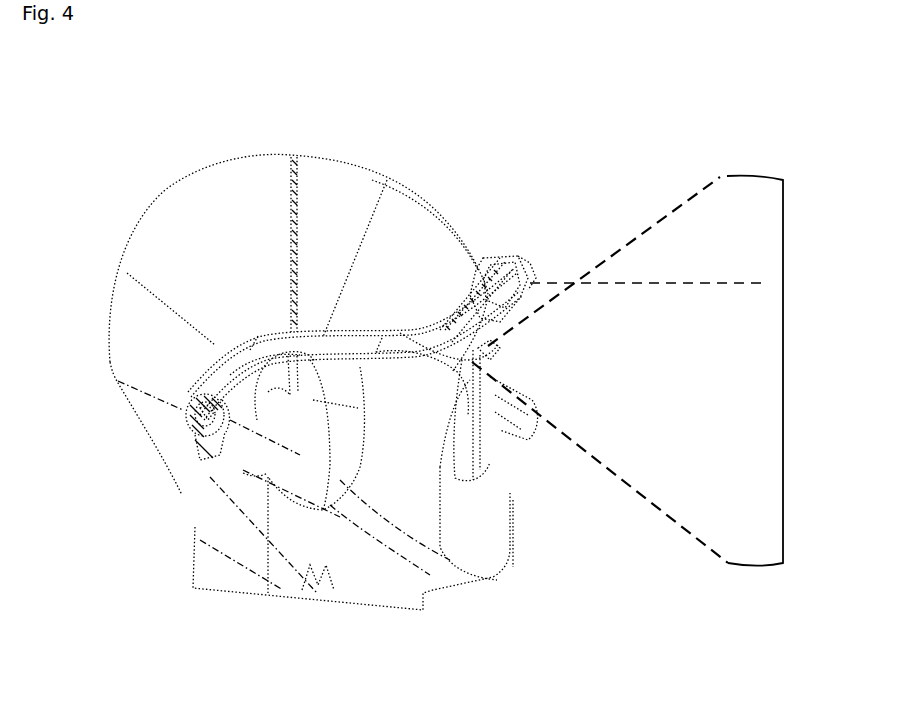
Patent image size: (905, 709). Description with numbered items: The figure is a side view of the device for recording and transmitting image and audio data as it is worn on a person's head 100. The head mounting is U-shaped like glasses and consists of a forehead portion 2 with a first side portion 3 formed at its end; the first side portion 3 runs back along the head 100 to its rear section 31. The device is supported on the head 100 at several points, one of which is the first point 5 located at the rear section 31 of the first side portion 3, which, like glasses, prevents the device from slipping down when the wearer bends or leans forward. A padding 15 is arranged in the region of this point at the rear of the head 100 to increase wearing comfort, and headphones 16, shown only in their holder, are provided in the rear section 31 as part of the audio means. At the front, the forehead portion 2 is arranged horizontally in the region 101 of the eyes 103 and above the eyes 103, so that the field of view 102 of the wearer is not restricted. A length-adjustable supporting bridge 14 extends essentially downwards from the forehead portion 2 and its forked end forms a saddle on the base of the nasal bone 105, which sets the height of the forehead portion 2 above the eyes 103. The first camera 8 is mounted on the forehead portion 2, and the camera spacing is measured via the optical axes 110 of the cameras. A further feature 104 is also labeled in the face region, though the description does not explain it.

The human head 100 is at (200, 200).
The first side portion 3 is at (323, 343).
The rear section of the first side portion 31 is at (237, 358).
The region of the eyes 101 is at (465, 342).
The supporting bridge 14 is at (502, 323).
The forehead portion 2 is at (500, 272).
The first camera 8 is at (535, 272).
The base of the nasal bone 105 is at (495, 359).
The eyes 103 is at (467, 357).
The first point 5 is at (183, 410).
The headphones 16 is at (203, 408).
The padding 15 is at (227, 413).
The eye region component 104 is at (272, 395).
The optical axis 110 is at (642, 282).
The field of view 102 is at (783, 375).